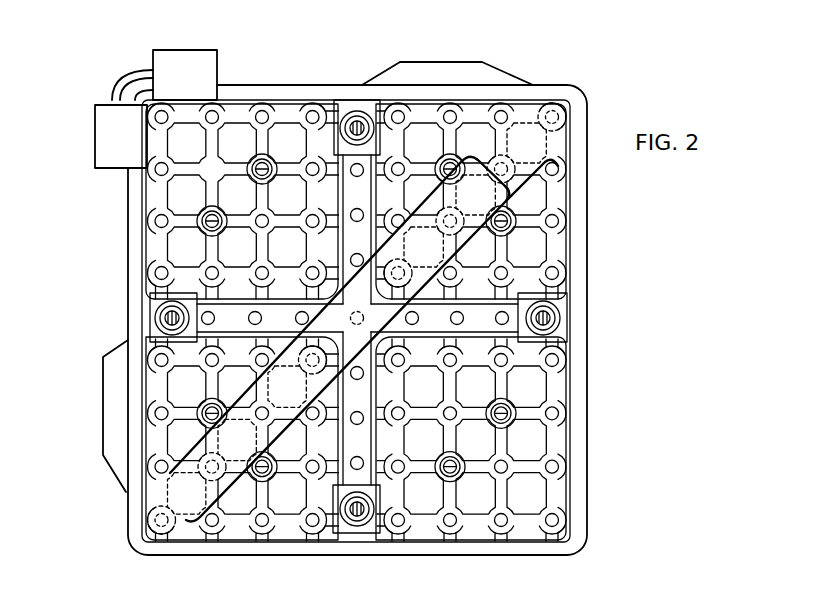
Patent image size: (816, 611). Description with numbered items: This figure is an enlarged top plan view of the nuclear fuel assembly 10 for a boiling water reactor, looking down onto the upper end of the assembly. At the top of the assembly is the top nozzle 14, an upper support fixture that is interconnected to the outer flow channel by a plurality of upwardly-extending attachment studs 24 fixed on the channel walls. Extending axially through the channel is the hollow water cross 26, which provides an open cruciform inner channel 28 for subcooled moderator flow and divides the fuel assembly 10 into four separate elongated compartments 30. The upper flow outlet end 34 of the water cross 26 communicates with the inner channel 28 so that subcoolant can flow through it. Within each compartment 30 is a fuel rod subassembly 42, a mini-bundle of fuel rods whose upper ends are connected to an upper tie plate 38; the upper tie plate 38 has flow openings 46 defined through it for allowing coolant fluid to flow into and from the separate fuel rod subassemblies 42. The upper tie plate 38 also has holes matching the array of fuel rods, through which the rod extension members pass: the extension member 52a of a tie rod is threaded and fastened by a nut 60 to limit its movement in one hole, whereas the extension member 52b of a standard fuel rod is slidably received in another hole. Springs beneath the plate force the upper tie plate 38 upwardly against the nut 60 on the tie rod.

The nuclear fuel assembly 10 is at (610, 60).
The top nozzle 14 is at (588, 373).
The attachment studs 24 is at (357, 118).
The hollow water cross 26 is at (240, 340).
The cruciform inner channel 28 is at (306, 331).
The compartments 30 is at (482, 104).
The upper flow outlet end 34 is at (235, 252).
The upper tie plate 38 is at (289, 104).
The fuel rod subassembly 42 is at (426, 104).
The flow openings 46 is at (207, 197).
The extension member of the tie rod 52a is at (207, 217).
The extension member of the standard fuel rod 52b is at (222, 108).
The nut 60 is at (195, 235).